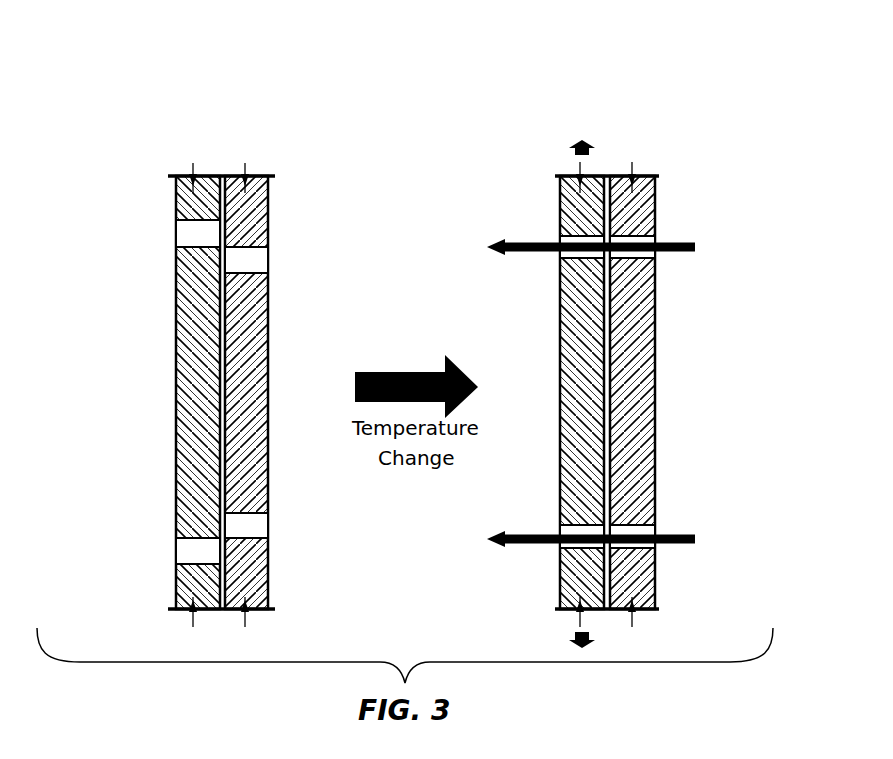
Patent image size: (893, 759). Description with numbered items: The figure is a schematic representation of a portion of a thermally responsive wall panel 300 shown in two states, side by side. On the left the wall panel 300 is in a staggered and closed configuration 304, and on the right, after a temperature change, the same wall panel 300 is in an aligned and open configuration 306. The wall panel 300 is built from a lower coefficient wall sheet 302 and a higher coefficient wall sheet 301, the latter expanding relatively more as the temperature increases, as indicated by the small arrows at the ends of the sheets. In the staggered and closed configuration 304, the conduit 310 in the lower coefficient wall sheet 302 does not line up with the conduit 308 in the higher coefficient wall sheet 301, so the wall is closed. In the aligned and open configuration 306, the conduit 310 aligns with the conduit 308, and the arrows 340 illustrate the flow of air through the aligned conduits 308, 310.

The thermally responsive wall panel 300 is at (194, 133).
The higher coefficient wall sheet 301 is at (268, 333).
The lower coefficient wall sheet 302 is at (176, 405).
The staggered and closed configuration 304 is at (157, 345).
The aligned and open configuration 306 is at (662, 332).
The conduit of the higher coefficient wall sheet 308 is at (272, 258).
The conduit of the lower coefficient wall sheet 310 is at (173, 230).
The arrows illustrating air flow 340 is at (507, 242).